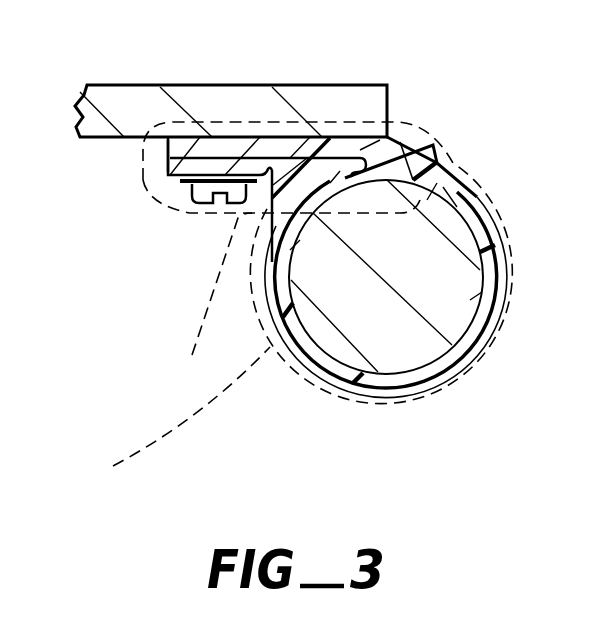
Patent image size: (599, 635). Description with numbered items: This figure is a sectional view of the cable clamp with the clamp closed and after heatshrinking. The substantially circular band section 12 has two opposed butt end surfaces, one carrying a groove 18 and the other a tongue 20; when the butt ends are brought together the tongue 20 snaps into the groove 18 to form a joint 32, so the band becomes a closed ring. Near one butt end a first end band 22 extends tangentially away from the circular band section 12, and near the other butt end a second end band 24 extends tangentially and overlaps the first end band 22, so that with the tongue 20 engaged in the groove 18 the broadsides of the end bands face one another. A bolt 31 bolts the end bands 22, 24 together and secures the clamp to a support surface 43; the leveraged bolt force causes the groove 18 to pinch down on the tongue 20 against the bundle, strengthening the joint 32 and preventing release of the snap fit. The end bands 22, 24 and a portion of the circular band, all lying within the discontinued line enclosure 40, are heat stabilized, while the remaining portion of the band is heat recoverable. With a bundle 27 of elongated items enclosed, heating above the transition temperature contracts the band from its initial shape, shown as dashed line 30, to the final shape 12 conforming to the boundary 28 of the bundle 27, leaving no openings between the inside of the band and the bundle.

The circular band section 12 is at (377, 375).
The groove 18 is at (347, 166).
The tongue 20 is at (402, 140).
The first end band 22 is at (167, 172).
The second end band 24 is at (160, 152).
The bundle 27 is at (407, 318).
The boundary 28 is at (307, 372).
The initial shape 30 is at (113, 466).
The bolt 31 is at (196, 204).
The joint 32 is at (368, 140).
The discontinued line enclosure 40 is at (193, 350).
The support surface 43 is at (148, 108).